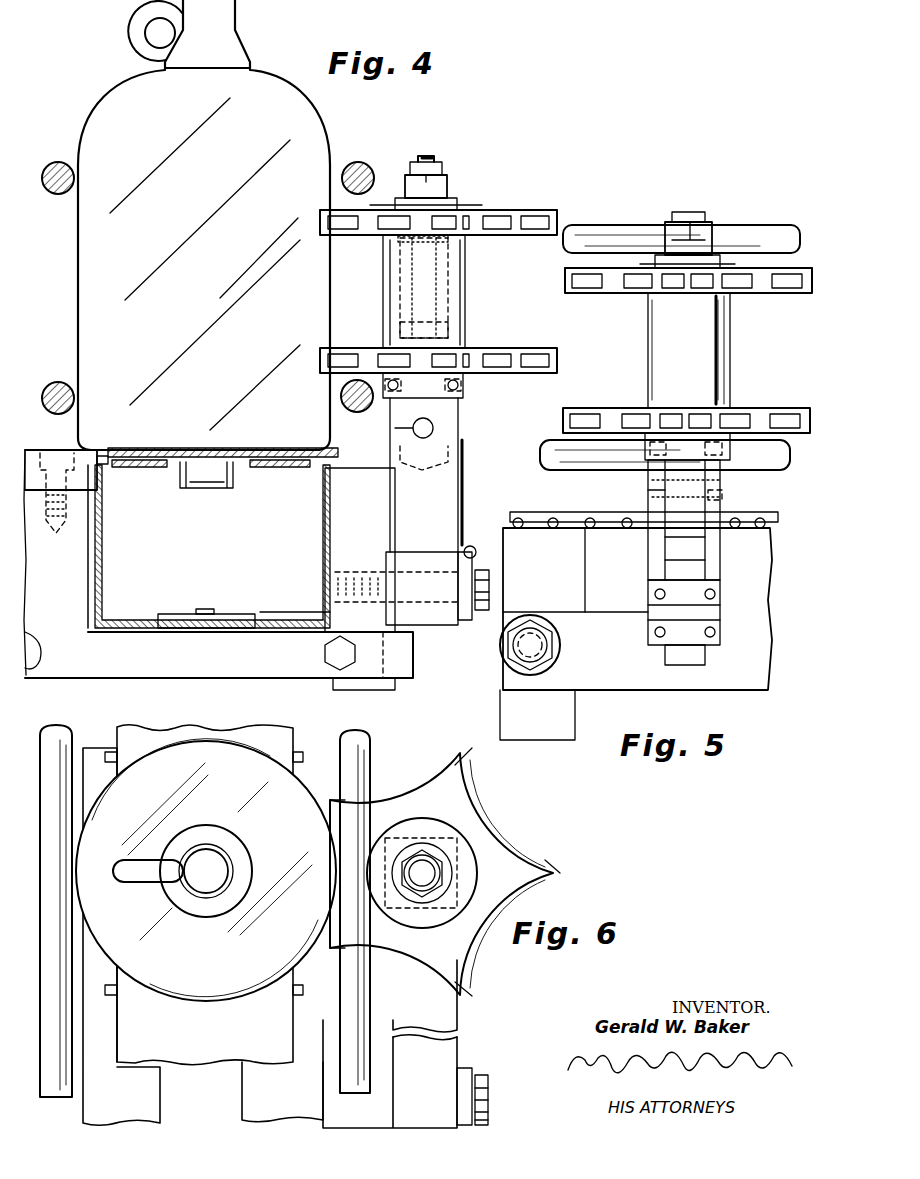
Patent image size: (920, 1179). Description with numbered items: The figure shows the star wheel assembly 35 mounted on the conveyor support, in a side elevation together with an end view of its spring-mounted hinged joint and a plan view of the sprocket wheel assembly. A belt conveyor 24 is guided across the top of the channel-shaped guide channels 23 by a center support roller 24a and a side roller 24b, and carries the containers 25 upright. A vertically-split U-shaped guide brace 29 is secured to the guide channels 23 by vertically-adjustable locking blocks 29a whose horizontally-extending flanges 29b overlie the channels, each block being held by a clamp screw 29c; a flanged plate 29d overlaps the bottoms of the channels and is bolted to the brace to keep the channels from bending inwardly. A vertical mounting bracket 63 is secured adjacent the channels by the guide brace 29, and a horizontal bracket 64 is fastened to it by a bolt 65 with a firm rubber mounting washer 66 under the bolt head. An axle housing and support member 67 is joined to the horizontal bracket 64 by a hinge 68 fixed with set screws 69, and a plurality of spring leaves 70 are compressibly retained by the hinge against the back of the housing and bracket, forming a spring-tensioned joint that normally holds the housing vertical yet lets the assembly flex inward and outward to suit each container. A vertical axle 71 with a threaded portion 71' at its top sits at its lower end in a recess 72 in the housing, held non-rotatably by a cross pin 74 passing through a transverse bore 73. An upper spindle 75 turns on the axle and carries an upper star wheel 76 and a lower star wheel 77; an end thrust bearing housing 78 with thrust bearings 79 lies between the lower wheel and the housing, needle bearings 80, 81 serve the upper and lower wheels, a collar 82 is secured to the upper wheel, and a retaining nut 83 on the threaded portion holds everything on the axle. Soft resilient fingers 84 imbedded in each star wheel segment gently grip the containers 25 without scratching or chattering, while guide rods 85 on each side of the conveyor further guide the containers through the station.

In FIG. 4, the conveyor guide channel 23 is at (100, 546).
In FIG. 5, the conveyor guide channel 23 is at (771, 565).
In FIG. 6, the conveyor guide channel 23 is at (240, 1097).
In FIG. 4, the belt conveyor 24 is at (181, 448).
In FIG. 5, the belt conveyor 24 is at (548, 512).
In FIG. 6, the belt conveyor 24 is at (186, 722).
In FIG. 4, the center support roller 24a is at (213, 490).
In FIG. 4, the side roller 24b is at (306, 462).
In FIG. 5, the side roller 24b is at (630, 525).
In FIG. 6, the side roller 24b is at (112, 1030).
In FIG. 4, the container 25 is at (316, 106).
In FIG. 6, the container 25 is at (260, 990).
In FIG. 4, the guide brace 29 is at (62, 594).
In FIG. 4, the locking block 29a is at (27, 448).
In FIG. 4, the flange 29b is at (106, 448).
In FIG. 4, the clamp screw 29c is at (48, 454).
In FIG. 4, the flanged plate 29d is at (186, 612).
In FIG. 4, the star wheel assembly 35 is at (508, 281).
In FIG. 5, the star wheel assembly 35 is at (772, 345).
In FIG. 4, the vertical mounting bracket 63 is at (357, 625).
In FIG. 5, the vertical mounting bracket 63 is at (586, 563).
In FIG. 6, the vertical mounting bracket 63 is at (340, 1128).
In FIG. 4, the horizontal bracket 64 is at (442, 625).
In FIG. 5, the horizontal bracket 64 is at (620, 612).
In FIG. 6, the horizontal bracket 64 is at (460, 1017).
In FIG. 4, the bolt 65 is at (483, 612).
In FIG. 5, the bolt 65 is at (562, 655).
In FIG. 6, the bolt 65 is at (490, 1097).
In FIG. 4, the rubber mounting washer 66 is at (465, 622).
In FIG. 5, the rubber mounting washer 66 is at (562, 636).
In FIG. 6, the rubber mounting washer 66 is at (462, 1068).
In FIG. 4, the axle housing and support member 67 is at (395, 497).
In FIG. 5, the axle housing and support member 67 is at (646, 490).
In FIG. 4, the hinge 68 is at (474, 546).
In FIG. 5, the hinge 68 is at (712, 613).
In FIG. 5, the set screw 69 is at (716, 631).
In FIG. 4, the spring leaf 70 is at (464, 485).
In FIG. 5, the spring leaf 70 is at (668, 513).
In FIG. 4, the axle 71 is at (454, 288).
In FIG. 4, the threaded portion 71' is at (438, 141).
In FIG. 5, the threaded portion 71' is at (682, 204).
In FIG. 4, the recess 72 is at (398, 462).
In FIG. 4, the transverse bore 73 is at (433, 427).
In FIG. 5, the transverse bore 73 is at (720, 498).
In FIG. 4, the cross pin 74 is at (398, 430).
In FIG. 5, the cross pin 74 is at (722, 490).
In FIG. 4, the upper spindle 75 is at (467, 295).
In FIG. 5, the upper spindle 75 is at (733, 368).
In FIG. 4, the upper star wheel 76 is at (556, 240).
In FIG. 5, the upper star wheel 76 is at (566, 284).
In FIG. 6, the upper star wheel 76 is at (480, 802).
In FIG. 4, the lower star wheel 77 is at (556, 348).
In FIG. 5, the lower star wheel 77 is at (598, 408).
In FIG. 4, the end thrust bearing housing 78 is at (470, 378).
In FIG. 5, the end thrust bearing housing 78 is at (726, 452).
In FIG. 4, the thrust bearing 79 is at (462, 396).
In FIG. 5, the thrust bearing 79 is at (648, 455).
In FIG. 4, the needle bearing 80 is at (452, 240).
In FIG. 4, the needle bearing 81 is at (452, 338).
In FIG. 4, the collar 82 is at (460, 205).
In FIG. 5, the collar 82 is at (656, 240).
In FIG. 6, the collar 82 is at (426, 830).
In FIG. 4, the retaining nut 83 is at (448, 170).
In FIG. 5, the retaining nut 83 is at (714, 226).
In FIG. 6, the retaining nut 83 is at (442, 882).
In FIG. 4, the resilient finger 84 is at (497, 212).
In FIG. 5, the resilient finger 84 is at (580, 288).
In FIG. 6, the resilient finger 84 is at (472, 775).
In FIG. 4, the guide rod 85 is at (62, 162).
In FIG. 5, the guide rod 85 is at (596, 232).
In FIG. 6, the guide rod 85 is at (58, 726).